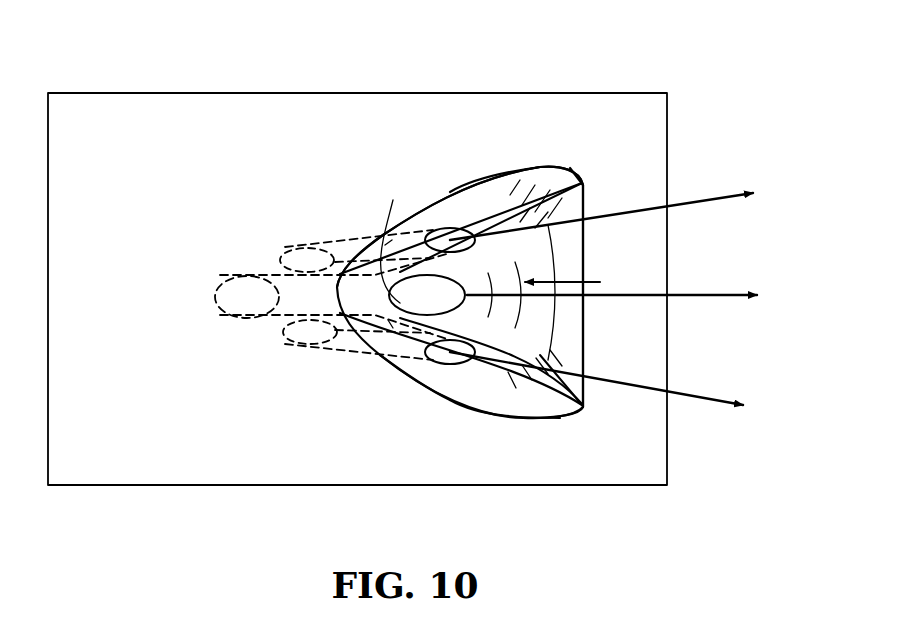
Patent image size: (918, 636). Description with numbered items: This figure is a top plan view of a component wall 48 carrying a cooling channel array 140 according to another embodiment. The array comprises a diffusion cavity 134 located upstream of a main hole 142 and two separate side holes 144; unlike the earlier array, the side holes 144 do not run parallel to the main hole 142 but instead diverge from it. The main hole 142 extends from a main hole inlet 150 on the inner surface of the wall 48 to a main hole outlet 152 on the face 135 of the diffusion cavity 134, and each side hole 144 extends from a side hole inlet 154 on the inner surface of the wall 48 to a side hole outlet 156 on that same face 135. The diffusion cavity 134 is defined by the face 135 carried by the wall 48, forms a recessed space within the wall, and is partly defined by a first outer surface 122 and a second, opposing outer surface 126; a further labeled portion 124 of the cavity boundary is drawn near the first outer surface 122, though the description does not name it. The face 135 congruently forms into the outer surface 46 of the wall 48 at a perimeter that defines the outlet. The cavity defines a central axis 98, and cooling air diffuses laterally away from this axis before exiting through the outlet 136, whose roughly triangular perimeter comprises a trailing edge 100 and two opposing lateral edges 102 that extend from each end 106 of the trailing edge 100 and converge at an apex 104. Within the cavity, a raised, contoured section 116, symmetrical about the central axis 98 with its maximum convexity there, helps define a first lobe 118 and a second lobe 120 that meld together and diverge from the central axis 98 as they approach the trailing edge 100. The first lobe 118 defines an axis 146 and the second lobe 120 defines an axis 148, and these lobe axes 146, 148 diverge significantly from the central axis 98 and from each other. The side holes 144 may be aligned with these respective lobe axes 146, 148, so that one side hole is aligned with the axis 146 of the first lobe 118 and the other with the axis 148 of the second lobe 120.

The outer surface 46 is at (103, 117).
The component wall 48 is at (557, 487).
The central axis 98 is at (631, 298).
The trailing edge 100 is at (583, 258).
The lateral edges 102 is at (498, 173).
The apex 104 is at (340, 288).
The end of the trailing edge 106 is at (585, 195).
The raised contoured section 116 is at (545, 327).
The first lobe 118 is at (545, 245).
The second lobe 120 is at (545, 355).
The first outer surface 122 is at (510, 190).
The upper flared portion 124 is at (565, 195).
The second outer surface 126 is at (540, 407).
The diffusion cavity 134 is at (470, 382).
The diffusion cavity face 135 is at (568, 317).
The outlet 136 is at (550, 198).
The cooling channel array 140 is at (600, 282).
The main hole 142 is at (278, 273).
The side holes 144 is at (362, 240).
The first lobe axis 146 is at (626, 205).
The second lobe axis 148 is at (622, 393).
The main hole inlet 150 is at (227, 313).
The main hole outlet 152 is at (377, 237).
The side hole inlet 154 is at (300, 247).
The side hole outlet 156 is at (450, 228).